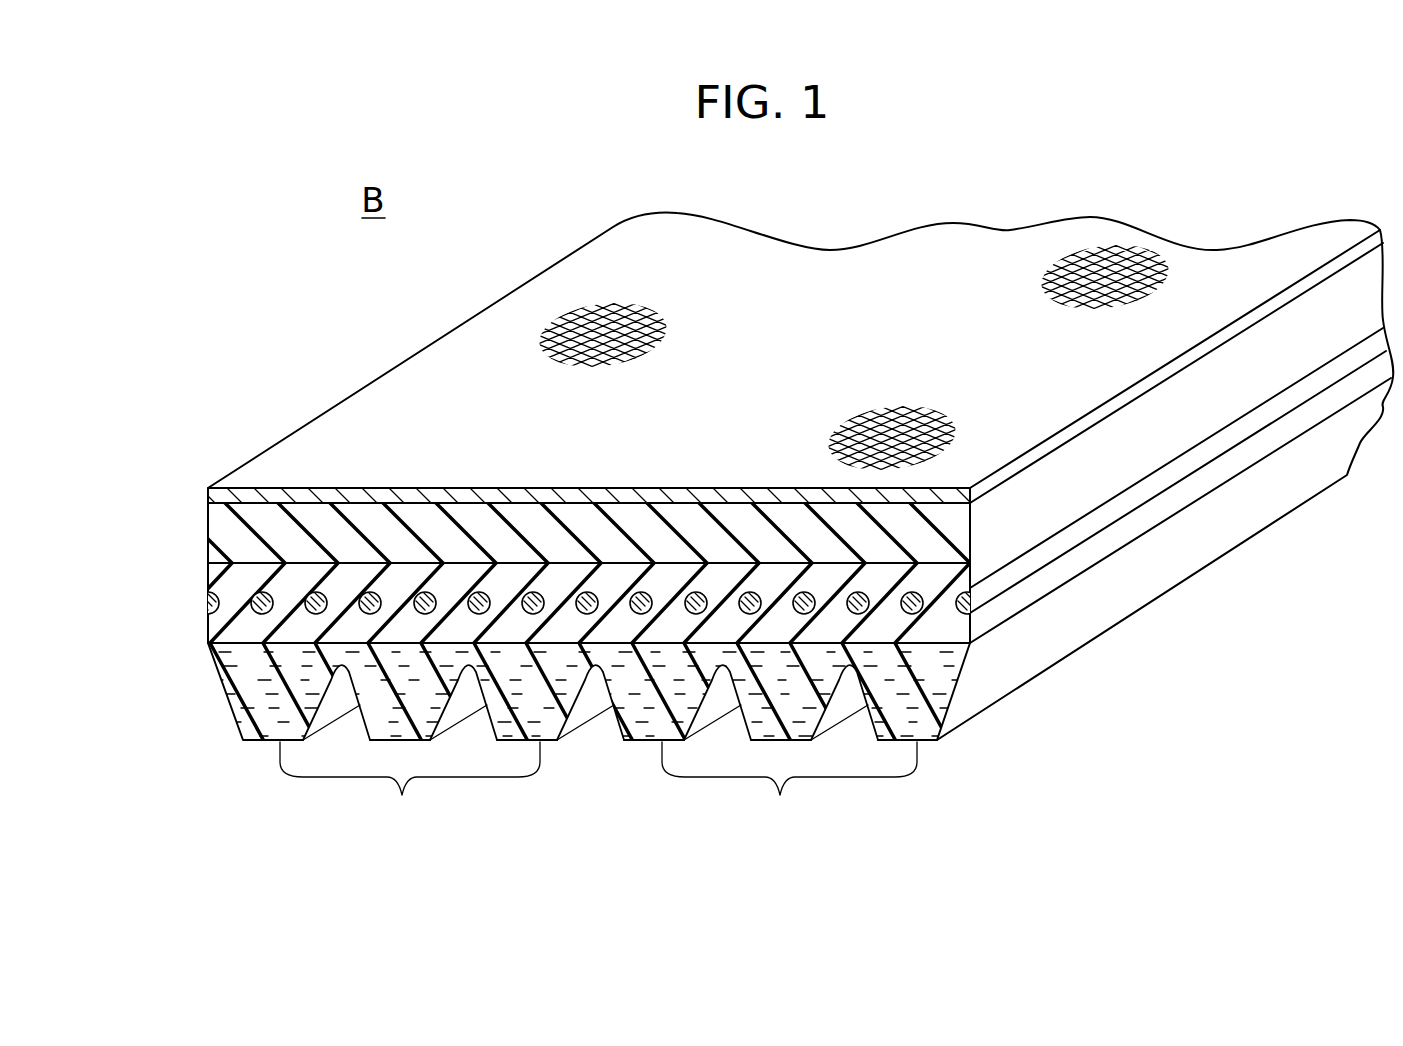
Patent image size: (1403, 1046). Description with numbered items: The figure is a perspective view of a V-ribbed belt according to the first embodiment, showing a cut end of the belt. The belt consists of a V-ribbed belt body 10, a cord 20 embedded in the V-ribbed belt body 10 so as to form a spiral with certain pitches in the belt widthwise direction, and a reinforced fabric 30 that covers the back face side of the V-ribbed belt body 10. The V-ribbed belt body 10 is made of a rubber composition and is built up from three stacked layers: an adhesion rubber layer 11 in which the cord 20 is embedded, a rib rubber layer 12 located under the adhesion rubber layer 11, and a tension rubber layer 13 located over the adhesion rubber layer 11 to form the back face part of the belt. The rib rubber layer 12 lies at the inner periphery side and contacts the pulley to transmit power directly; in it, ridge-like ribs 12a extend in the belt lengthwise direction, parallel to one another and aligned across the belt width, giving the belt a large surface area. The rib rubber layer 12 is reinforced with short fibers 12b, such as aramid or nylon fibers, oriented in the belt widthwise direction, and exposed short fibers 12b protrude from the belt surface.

The V-ribbed belt body 10 is at (199, 628).
The adhesion rubber layer 11 is at (973, 641).
The rib rubber layer 12 is at (237, 688).
The ribs 12a is at (598, 791).
The short fibers 12b is at (948, 712).
The tension rubber layer 13 is at (977, 523).
The cord 20 is at (427, 592).
The reinforced fabric 30 is at (709, 488).